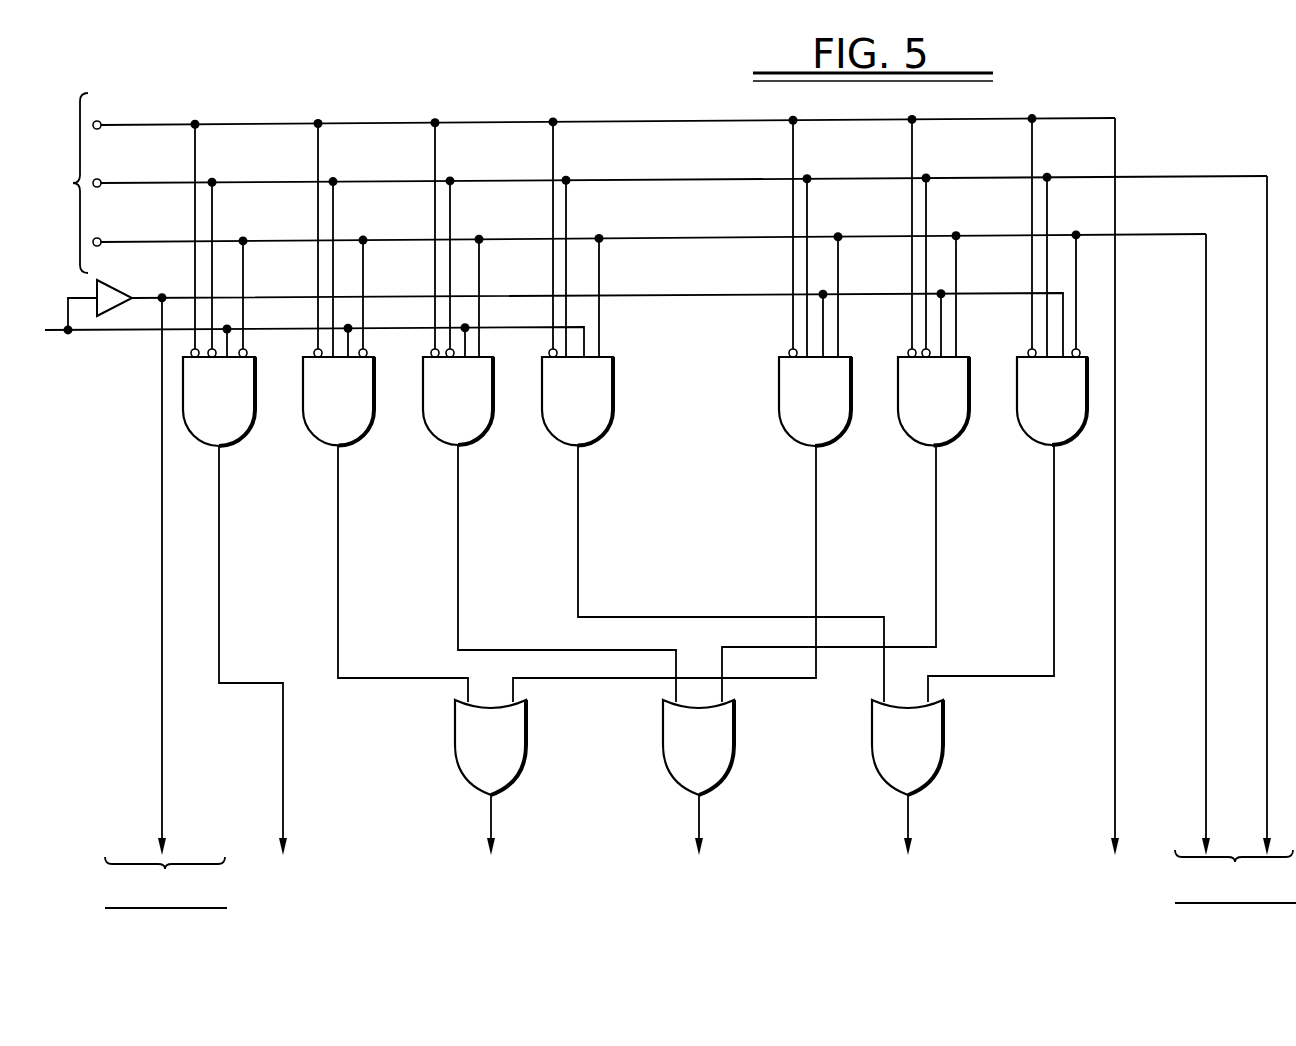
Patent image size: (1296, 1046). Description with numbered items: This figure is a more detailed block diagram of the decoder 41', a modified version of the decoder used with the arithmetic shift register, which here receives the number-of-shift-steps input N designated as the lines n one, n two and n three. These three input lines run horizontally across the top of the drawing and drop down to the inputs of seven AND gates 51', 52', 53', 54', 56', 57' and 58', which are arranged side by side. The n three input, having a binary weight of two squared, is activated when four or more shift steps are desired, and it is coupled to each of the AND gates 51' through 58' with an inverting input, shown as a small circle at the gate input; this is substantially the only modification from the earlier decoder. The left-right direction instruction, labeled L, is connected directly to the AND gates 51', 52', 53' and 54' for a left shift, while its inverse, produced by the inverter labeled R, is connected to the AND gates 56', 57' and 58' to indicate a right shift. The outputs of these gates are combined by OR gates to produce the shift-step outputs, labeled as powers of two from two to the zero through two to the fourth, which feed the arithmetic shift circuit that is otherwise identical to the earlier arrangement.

The decoder 41' is at (659, 476).
The AND gate 51' is at (239, 422).
The AND gate 52' is at (359, 422).
The AND gate 53' is at (479, 422).
The AND gate 54' is at (610, 421).
The AND gate 56' is at (830, 421).
The AND gate 57' is at (958, 420).
The AND gate 58' is at (1064, 420).
The inverter R is at (117, 281).